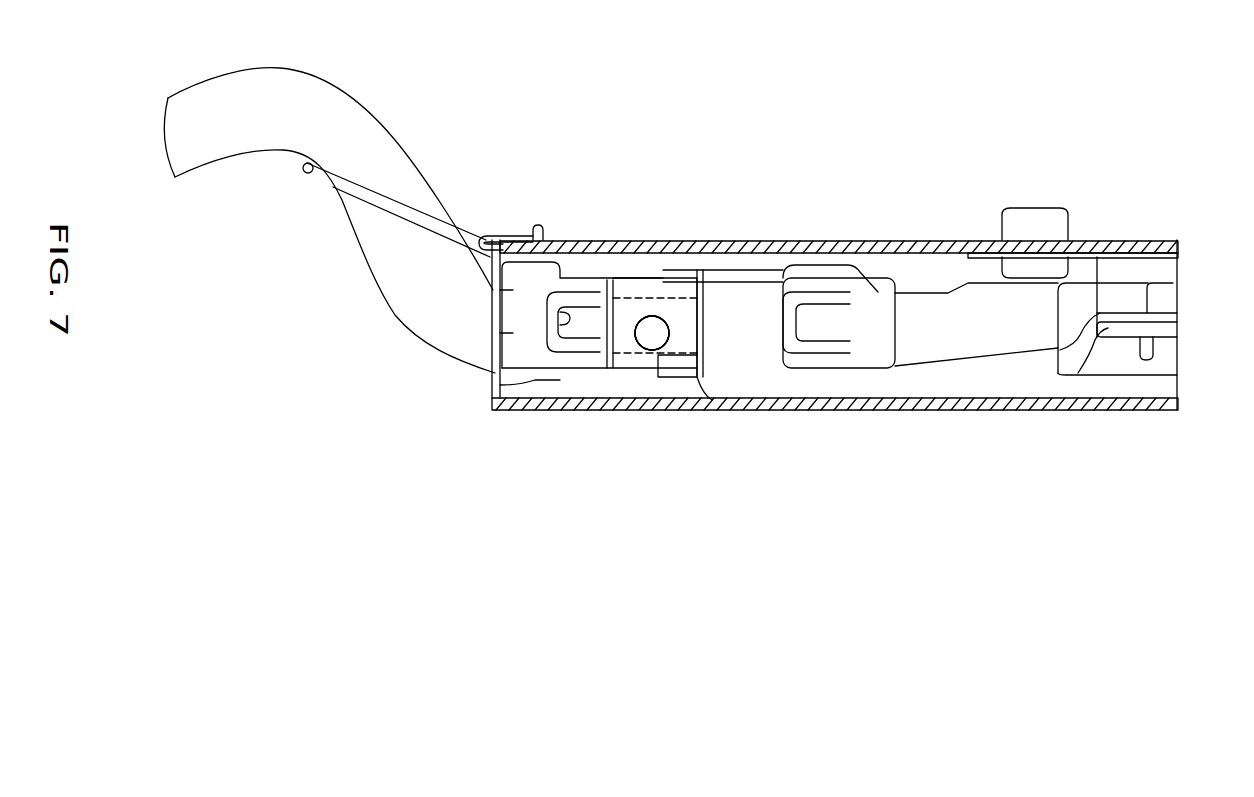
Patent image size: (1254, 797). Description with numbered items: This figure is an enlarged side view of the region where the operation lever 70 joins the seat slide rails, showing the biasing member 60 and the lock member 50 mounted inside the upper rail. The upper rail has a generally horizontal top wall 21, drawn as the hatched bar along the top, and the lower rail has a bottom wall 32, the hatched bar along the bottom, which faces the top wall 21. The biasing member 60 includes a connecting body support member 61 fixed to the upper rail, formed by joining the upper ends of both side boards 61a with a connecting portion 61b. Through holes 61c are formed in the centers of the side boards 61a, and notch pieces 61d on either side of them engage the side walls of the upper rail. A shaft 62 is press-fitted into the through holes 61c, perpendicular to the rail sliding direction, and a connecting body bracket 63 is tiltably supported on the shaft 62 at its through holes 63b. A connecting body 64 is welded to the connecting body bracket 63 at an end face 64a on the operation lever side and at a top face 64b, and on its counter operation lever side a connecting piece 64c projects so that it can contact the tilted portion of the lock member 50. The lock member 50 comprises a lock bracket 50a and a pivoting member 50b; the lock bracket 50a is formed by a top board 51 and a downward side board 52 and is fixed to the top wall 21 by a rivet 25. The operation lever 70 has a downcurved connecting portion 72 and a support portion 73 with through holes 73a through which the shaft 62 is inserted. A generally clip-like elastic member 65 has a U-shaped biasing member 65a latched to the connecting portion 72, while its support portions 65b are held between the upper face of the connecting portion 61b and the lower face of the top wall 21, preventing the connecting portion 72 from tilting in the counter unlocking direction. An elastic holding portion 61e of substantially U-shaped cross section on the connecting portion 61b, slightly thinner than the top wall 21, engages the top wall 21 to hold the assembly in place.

The top wall 21 is at (890, 240).
The rivet 25 is at (1025, 207).
The bottom wall 32 is at (905, 412).
The lock member 50 is at (1190, 295).
The lock bracket 50a is at (1155, 152).
The pivoting member 50b is at (1178, 320).
The top board 51 is at (1097, 257).
The side board 52 is at (1080, 272).
The biasing member 60 is at (797, 168).
The connecting body support member 61 is at (490, 380).
The side boards 61a is at (508, 333).
The connecting portion 61b is at (545, 260).
The through holes 61c is at (650, 315).
The notch pieces 61d is at (515, 378).
The elastic holding portion 61e is at (507, 233).
The shaft 62 is at (645, 335).
The connecting body bracket 63 is at (698, 395).
The through holes 63b is at (650, 315).
The connecting body 64 is at (963, 380).
The end face 64a is at (718, 420).
The top face 64b is at (768, 277).
The connecting piece 64c is at (1080, 378).
The elastic member 65 is at (498, 124).
The U-shaped biasing member 65a is at (387, 197).
The support portions 65b is at (487, 237).
The operation lever 70 is at (262, 216).
The connecting portion 72 is at (338, 84).
The support portion 73 is at (546, 385).
The through holes 73a is at (650, 315).